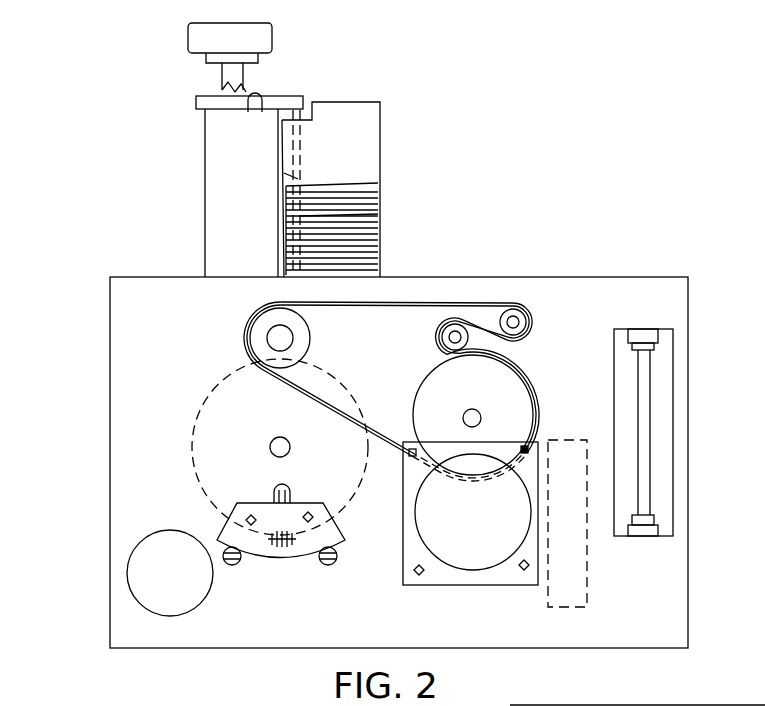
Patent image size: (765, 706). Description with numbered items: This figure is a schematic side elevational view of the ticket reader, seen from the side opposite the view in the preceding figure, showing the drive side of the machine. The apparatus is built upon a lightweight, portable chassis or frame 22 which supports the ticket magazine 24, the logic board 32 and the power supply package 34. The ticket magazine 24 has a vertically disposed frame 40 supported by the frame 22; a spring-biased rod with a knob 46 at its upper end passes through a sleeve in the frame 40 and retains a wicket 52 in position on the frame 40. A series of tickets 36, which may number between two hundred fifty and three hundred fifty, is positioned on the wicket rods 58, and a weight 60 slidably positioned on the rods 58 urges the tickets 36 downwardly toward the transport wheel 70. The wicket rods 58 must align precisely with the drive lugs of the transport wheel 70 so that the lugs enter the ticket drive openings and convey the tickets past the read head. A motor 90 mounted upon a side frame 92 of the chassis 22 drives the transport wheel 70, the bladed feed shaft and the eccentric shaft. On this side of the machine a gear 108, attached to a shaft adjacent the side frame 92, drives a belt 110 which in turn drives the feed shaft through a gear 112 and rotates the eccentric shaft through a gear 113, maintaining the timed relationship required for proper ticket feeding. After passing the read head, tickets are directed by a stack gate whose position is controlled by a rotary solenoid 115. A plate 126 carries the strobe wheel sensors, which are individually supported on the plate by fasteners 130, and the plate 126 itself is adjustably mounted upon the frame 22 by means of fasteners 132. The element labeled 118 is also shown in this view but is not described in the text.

The frame 22 is at (205, 628).
The ticket magazine 24 is at (272, 78).
The logic board 32 is at (640, 438).
The power supply package 34 is at (574, 587).
The tickets 36 is at (376, 260).
The frame of ticket magazine 40 is at (233, 155).
The knob 46 is at (247, 50).
The wicket 52 is at (289, 92).
The wicket rods 58 is at (308, 214).
The weight 60 is at (352, 172).
The transport wheel 70 is at (200, 415).
The motor 90 is at (486, 524).
The side frame 92 is at (432, 636).
The gear 108 is at (486, 406).
The belt 110 is at (486, 294).
The gear 112 is at (266, 323).
The gear 113 is at (524, 316).
The rotary solenoid 115 is at (152, 565).
The support 118 is at (666, 705).
The plate 126 is at (298, 530).
The fasteners 130 is at (246, 520).
The fasteners 132 is at (221, 572).